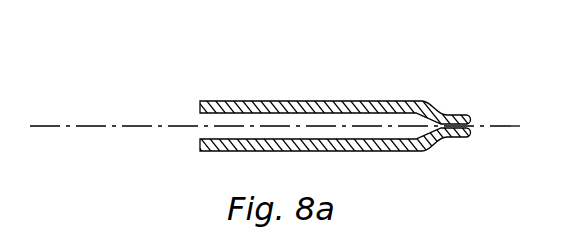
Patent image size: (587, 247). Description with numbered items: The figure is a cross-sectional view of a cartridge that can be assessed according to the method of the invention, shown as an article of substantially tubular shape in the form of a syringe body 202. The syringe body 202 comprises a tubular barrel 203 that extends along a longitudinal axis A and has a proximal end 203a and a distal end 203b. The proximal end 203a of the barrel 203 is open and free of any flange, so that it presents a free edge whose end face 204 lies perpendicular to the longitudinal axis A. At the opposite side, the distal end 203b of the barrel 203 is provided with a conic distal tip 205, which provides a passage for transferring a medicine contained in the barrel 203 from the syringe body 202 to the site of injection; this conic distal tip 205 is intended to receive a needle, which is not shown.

The longitudinal axis A is at (59, 126).
The syringe body 202 is at (352, 75).
The tubular barrel 203 is at (243, 100).
The proximal end 203a is at (197, 123).
The distal end 203b is at (460, 108).
The end face 204 is at (198, 142).
The conic distal tip 205 is at (458, 137).